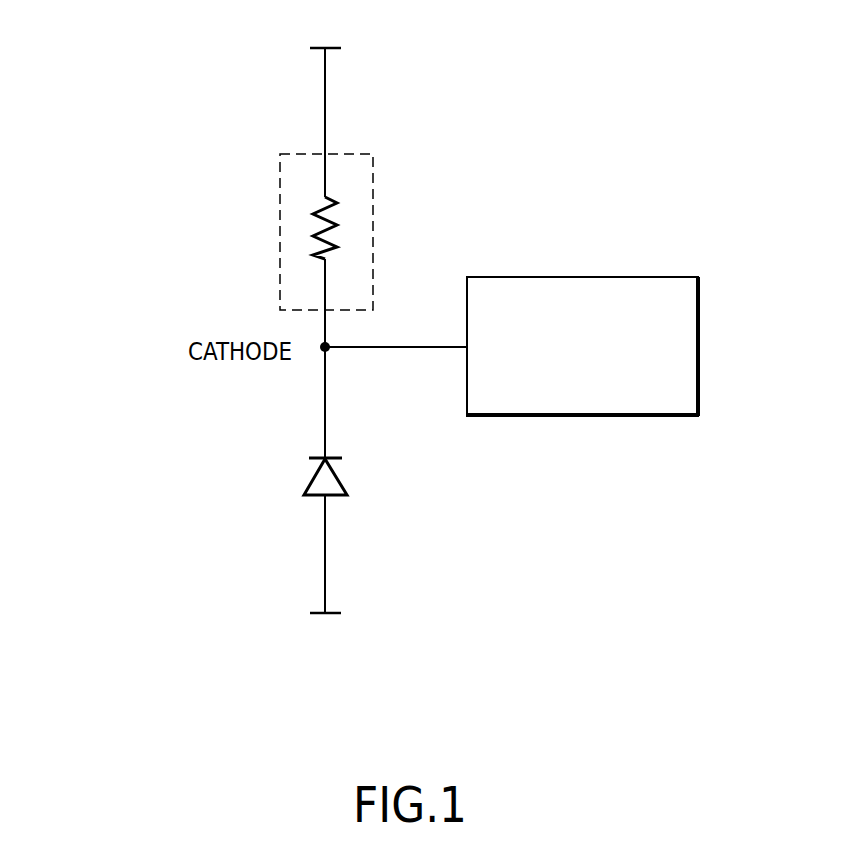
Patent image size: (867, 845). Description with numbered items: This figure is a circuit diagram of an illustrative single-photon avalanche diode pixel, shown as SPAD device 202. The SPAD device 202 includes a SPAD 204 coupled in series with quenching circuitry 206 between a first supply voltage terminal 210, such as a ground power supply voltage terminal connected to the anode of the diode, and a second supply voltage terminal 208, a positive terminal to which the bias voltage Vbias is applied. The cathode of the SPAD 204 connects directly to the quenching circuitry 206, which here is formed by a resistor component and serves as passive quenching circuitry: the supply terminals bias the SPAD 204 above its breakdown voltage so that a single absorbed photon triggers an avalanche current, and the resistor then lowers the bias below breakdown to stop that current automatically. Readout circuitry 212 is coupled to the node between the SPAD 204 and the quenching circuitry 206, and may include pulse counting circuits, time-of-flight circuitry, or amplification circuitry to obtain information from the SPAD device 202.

The SPAD device 202 is at (150, 118).
The SPAD 204 is at (260, 490).
The quenching circuitry 206 is at (280, 228).
The second supply voltage terminal 208 is at (331, 48).
The first supply voltage terminal 210 is at (318, 616).
The readout circuitry 212 is at (615, 276).